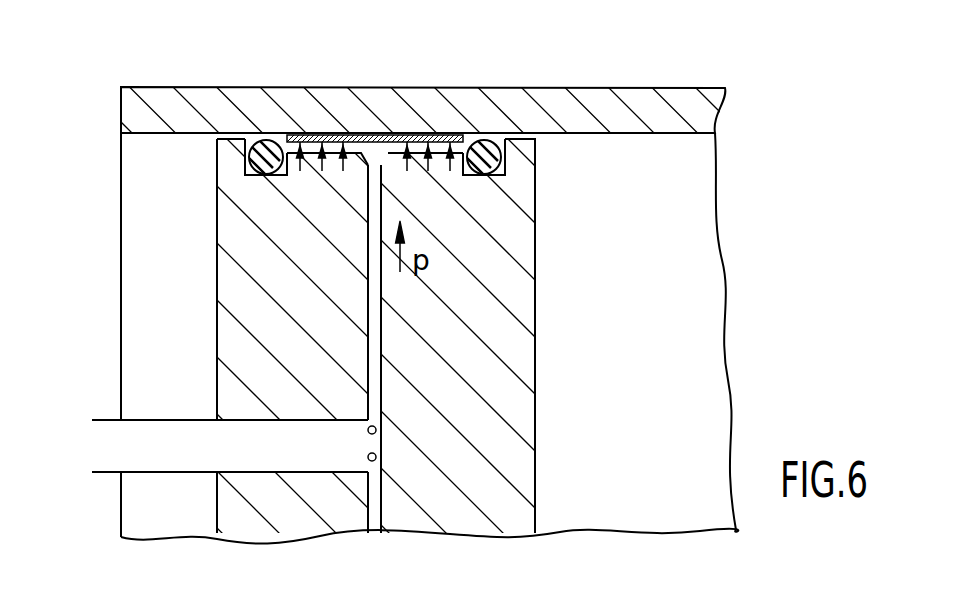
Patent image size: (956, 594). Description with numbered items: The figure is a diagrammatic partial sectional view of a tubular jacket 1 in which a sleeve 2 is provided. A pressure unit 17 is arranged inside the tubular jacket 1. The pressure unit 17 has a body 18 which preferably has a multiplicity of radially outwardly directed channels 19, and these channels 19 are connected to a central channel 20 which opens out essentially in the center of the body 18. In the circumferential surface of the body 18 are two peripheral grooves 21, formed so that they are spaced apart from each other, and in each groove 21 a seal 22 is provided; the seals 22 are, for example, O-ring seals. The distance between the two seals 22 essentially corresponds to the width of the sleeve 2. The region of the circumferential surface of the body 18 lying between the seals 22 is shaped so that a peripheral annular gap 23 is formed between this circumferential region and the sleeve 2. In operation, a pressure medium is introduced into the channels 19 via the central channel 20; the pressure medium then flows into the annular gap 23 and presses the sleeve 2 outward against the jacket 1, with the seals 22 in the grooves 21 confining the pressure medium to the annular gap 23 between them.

The tubular jacket 1 is at (648, 110).
The sleeve 2 is at (413, 134).
The pressure unit 17 is at (95, 301).
The body 18 is at (498, 268).
The channels 19 is at (368, 457).
The central channel 20 is at (126, 439).
The peripheral grooves 21 is at (256, 176).
The seals 22 is at (265, 140).
The annular gap 23 is at (357, 134).